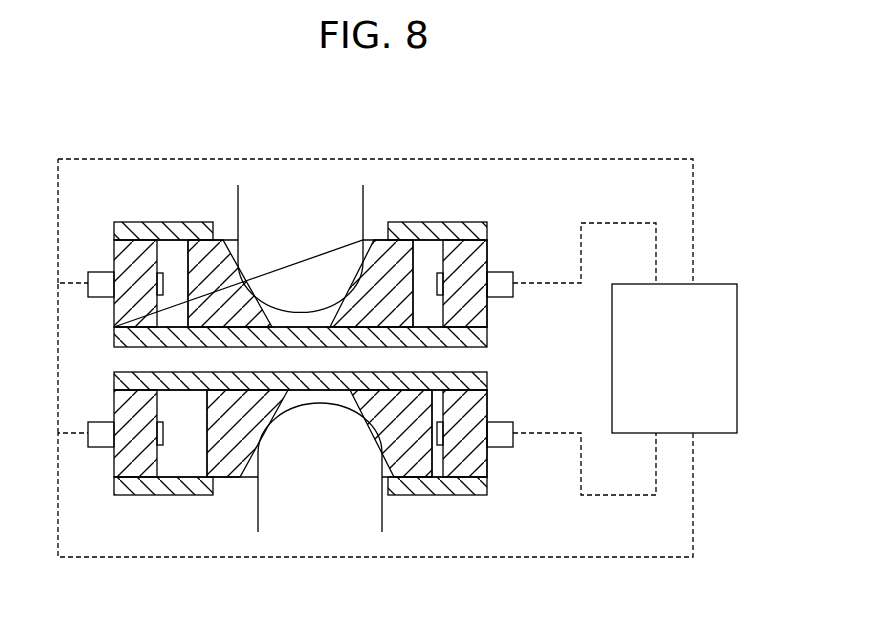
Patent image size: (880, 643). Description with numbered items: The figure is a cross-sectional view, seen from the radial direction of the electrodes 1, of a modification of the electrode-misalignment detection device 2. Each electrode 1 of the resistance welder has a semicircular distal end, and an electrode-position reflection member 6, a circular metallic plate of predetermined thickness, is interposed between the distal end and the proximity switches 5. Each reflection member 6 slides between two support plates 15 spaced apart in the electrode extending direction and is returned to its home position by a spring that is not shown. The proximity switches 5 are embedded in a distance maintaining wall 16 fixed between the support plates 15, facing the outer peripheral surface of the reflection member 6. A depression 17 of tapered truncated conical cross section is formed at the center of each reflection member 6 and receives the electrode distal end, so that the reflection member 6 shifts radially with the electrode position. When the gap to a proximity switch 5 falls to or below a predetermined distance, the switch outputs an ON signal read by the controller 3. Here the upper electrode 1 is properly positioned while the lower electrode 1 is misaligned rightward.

The electrode 1 is at (363, 203).
The electrode-misalignment detection device 2 is at (519, 183).
The controller 3 is at (737, 346).
The proximity switch 5 is at (96, 272).
The electrode-position reflection member 6 is at (425, 248).
The support plate 15 is at (150, 222).
The distance maintaining wall 16 is at (114, 316).
The depression 17 is at (240, 250).